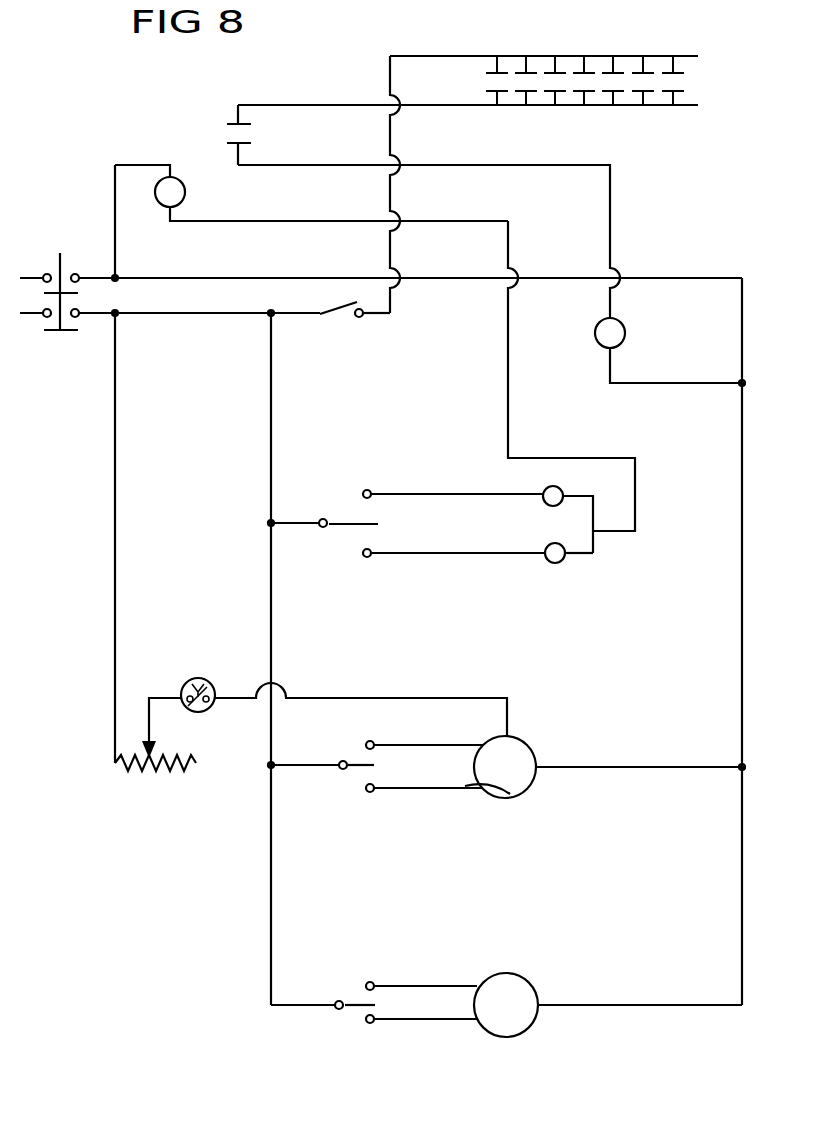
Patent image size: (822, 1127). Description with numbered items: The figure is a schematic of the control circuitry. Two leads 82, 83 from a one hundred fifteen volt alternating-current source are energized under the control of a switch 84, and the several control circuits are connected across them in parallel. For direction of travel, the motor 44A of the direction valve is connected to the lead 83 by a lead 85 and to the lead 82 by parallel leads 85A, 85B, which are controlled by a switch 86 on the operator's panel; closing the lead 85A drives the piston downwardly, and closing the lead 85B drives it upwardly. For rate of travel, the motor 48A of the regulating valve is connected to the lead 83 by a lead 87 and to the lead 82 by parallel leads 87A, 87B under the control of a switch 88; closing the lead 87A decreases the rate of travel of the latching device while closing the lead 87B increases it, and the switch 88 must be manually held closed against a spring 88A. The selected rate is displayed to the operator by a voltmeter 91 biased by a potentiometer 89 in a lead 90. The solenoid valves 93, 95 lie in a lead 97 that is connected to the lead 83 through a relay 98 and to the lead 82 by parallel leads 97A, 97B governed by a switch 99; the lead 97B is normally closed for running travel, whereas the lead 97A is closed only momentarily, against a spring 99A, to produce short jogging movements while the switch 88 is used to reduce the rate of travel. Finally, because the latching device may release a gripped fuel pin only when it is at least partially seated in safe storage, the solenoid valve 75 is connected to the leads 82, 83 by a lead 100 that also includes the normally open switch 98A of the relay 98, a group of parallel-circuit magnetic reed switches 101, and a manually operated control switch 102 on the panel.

The motor 44A is at (534, 979).
The motor 48A is at (533, 750).
The solenoid valve 75 is at (595, 330).
The lead 82 is at (178, 318).
The lead 83 is at (236, 276).
The switch 84 is at (61, 343).
The lead 85 is at (702, 1008).
The lead 85A is at (385, 982).
The lead 85B is at (395, 1022).
The switch 86 is at (351, 1016).
The lead 87 is at (693, 770).
The lead 87A is at (458, 750).
The lead 87B is at (510, 794).
The switch 88 is at (351, 779).
The spring 88A is at (357, 762).
The potentiometer 89 is at (162, 784).
The lead 90 is at (385, 697).
The voltmeter 91 is at (205, 679).
The solenoid valve 93 is at (558, 565).
The solenoid valve 95 is at (565, 492).
The lead 97 is at (508, 413).
The lead 97A is at (468, 497).
The lead 97B is at (487, 557).
The relay 98 is at (188, 192).
The normally open switch 98A is at (262, 132).
The switch 99 is at (346, 536).
The spring 99A is at (357, 517).
The lead 100 is at (552, 162).
The magnetic reed switches 101 is at (634, 116).
The control switch 102 is at (343, 318).